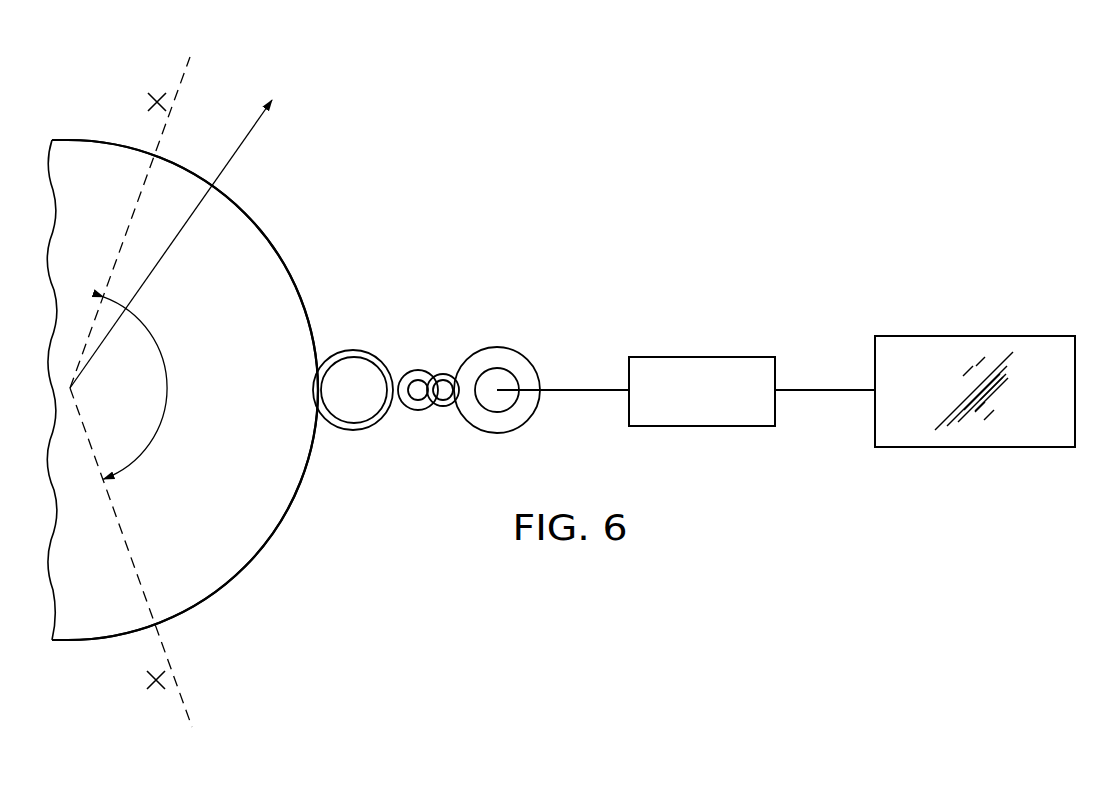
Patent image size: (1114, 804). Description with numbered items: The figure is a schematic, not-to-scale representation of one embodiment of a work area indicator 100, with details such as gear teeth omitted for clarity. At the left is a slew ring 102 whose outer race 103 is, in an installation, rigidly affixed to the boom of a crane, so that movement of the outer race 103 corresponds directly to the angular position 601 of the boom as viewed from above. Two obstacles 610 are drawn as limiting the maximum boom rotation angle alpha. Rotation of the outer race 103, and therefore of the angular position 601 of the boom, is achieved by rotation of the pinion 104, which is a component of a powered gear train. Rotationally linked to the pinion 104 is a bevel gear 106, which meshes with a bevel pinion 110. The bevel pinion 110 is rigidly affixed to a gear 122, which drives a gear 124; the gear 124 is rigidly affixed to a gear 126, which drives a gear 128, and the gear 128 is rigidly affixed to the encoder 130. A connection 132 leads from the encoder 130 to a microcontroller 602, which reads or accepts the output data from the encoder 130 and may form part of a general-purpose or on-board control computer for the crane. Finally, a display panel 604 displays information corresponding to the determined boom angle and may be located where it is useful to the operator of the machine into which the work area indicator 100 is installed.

The work area indicator 100 is at (910, 168).
The slew ring 102 is at (251, 577).
The outer race 103 is at (285, 270).
The pinion 104 is at (353, 360).
The bevel gear 106 is at (353, 431).
The bevel pinion 110 is at (418, 370).
The gear 122 is at (418, 401).
The gear 124 is at (443, 374).
The gear 126 is at (443, 401).
The gear 128 is at (497, 347).
The encoder 130 is at (497, 413).
The signal line 132 is at (580, 390).
The angular position 601 is at (238, 152).
The microcontroller 602 is at (725, 357).
The display panel 604 is at (995, 336).
The obstacles 610 is at (157, 92).